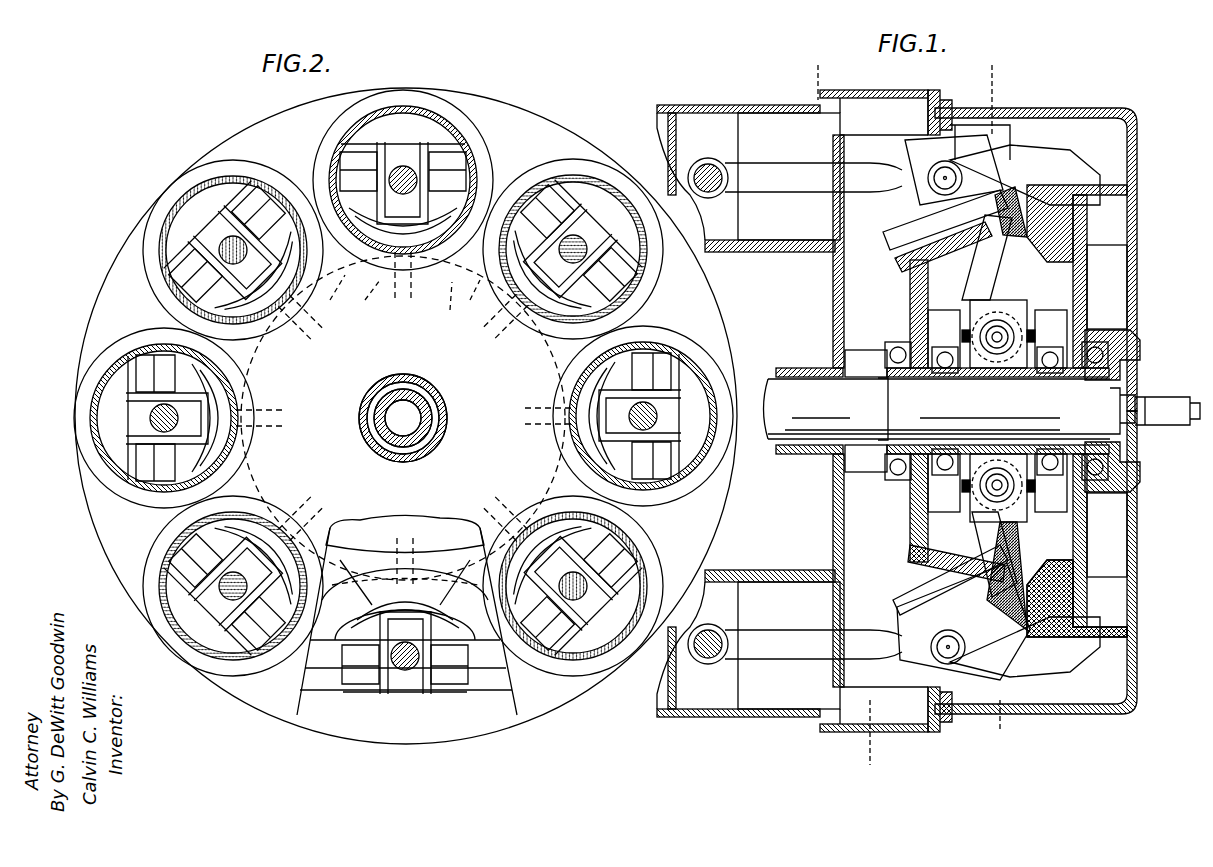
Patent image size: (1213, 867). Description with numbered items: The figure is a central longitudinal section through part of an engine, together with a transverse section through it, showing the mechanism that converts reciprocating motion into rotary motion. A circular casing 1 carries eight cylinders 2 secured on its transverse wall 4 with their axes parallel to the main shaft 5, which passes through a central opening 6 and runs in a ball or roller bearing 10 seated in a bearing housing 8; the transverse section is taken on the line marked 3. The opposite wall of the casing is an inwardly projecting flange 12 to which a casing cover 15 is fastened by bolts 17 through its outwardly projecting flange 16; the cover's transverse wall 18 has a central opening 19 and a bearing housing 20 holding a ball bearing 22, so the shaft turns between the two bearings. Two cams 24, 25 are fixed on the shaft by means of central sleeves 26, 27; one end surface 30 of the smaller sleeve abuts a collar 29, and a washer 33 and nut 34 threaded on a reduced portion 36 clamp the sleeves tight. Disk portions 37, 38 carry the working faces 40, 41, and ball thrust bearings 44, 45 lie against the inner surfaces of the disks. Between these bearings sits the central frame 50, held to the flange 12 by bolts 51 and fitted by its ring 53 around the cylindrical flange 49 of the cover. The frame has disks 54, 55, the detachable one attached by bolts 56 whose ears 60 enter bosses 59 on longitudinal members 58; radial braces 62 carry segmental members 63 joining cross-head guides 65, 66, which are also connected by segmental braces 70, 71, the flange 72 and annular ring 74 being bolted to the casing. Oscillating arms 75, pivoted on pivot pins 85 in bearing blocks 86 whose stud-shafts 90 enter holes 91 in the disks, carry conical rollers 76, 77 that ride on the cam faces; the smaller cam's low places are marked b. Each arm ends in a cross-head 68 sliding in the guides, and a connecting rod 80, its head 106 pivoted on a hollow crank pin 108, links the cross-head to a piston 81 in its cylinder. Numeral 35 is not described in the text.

In FIG. 2, the casing 1 is at (255, 132).
In FIG. 1, the casing 1 is at (894, 90).
In FIG. 2, the cylinders 2 is at (150, 258).
In FIG. 1, the cylinders 2 is at (768, 105).
In FIG. 1, the section line 3— 3 is at (994, 63).
In FIG. 2, the transverse wall 4 is at (392, 528).
In FIG. 1, the transverse wall 4 is at (833, 306).
In FIG. 2, the main shaft 5 is at (372, 402).
In FIG. 1, the central opening 6 is at (780, 380).
In FIG. 1, the bearing housing 8 is at (875, 391).
In FIG. 1, the ball or roller bearing 10 is at (882, 362).
In FIG. 2, the inwardly projecting flange 12 is at (440, 128).
In FIG. 1, the inwardly projecting flange 12 is at (928, 133).
In FIG. 1, the casing cover 15 is at (1050, 108).
In FIG. 1, the outwardly projecting flange 16 is at (948, 105).
In FIG. 1, the bolts 17 is at (974, 95).
In FIG. 1, the transverse wall 18 is at (1137, 256).
In FIG. 1, the central opening 19 is at (1160, 440).
In FIG. 1, the bearing housing 20 is at (1128, 322).
In FIG. 1, the ball bearing 22 is at (1140, 355).
In FIG. 2, the cam 24 is at (342, 300).
In FIG. 1, the cam 24 is at (1087, 300).
In FIG. 2, the cam 25 is at (370, 290).
In FIG. 1, the cam 25 is at (908, 298).
In FIG. 1, the central sleeve 26 is at (1018, 378).
In FIG. 1, the central sleeve 27 is at (988, 378).
In FIG. 1, the collar 29 is at (876, 440).
In FIG. 1, the end surface 30 is at (880, 376).
In FIG. 1, the washer 33 is at (1138, 380).
In FIG. 1, the nut 34 is at (1150, 392).
In FIG. 1, the spacer 35 is at (912, 323).
In FIG. 1, the reduced portion 36 is at (1165, 408).
In FIG. 1, the disk portion 37 is at (1082, 320).
In FIG. 1, the disk portion 38 is at (907, 321).
In FIG. 2, the working face 40 is at (478, 294).
In FIG. 1, the working face 40 is at (1022, 228).
In FIG. 2, the working face 41 is at (452, 310).
In FIG. 1, the working face 41 is at (908, 268).
In FIG. 1, the ball thrust bearing 44 is at (1051, 403).
In FIG. 1, the ball thrust bearing 45 is at (950, 360).
In FIG. 1, the cylindrical flange 49 is at (1125, 223).
In FIG. 2, the central frame 50 is at (238, 190).
In FIG. 1, the central frame 50 is at (918, 150).
In FIG. 1, the bolts 51 is at (962, 125).
In FIG. 1, the ring 53 is at (1130, 197).
In FIG. 1, the disk 54 is at (1040, 512).
In FIG. 1, the disk 55 is at (962, 322).
In FIG. 1, the bolts 56 is at (1040, 305).
In FIG. 1, the longitudinal members 58 is at (908, 318).
In FIG. 1, the enlarged bosses 59 is at (1038, 292).
In FIG. 1, the outwardly projecting ears 60 is at (1038, 320).
In FIG. 2, the radial braces 62 is at (332, 555).
In FIG. 1, the radial braces 62 is at (1012, 270).
In FIG. 2, the segmental members 63 is at (553, 197).
In FIG. 2, the cross-head guide 65 is at (372, 170).
In FIG. 1, the cross-head guide 65 is at (1100, 168).
In FIG. 2, the cross-head guide 66 is at (428, 170).
In FIG. 2, the cross-head 68 is at (200, 235).
In FIG. 1, the cross-head 68 is at (912, 200).
In FIG. 2, the segmental brace 70 is at (548, 205).
In FIG. 1, the segmental brace 70 is at (960, 136).
In FIG. 1, the segmental brace 71 is at (1055, 140).
In FIG. 2, the outwardly projecting flange 72 is at (187, 243).
In FIG. 1, the outwardly projecting flange 72 is at (955, 100).
In FIG. 1, the annular detachable ring 74 is at (966, 115).
In FIG. 1, the oscillating arm 75 is at (966, 305).
In FIG. 2, the roller 76 is at (405, 262).
In FIG. 1, the roller 76 is at (925, 232).
In FIG. 2, the roller 77 is at (430, 265).
In FIG. 1, the roller 77 is at (935, 250).
In FIG. 2, the connecting rod 80 is at (405, 170).
In FIG. 1, the connecting rod 80 is at (790, 172).
In FIG. 1, the piston 81 is at (676, 152).
In FIG. 1, the pivot pin 85 is at (1007, 352).
In FIG. 1, the bearing block 86 is at (997, 354).
In FIG. 1, the stud-shafts 90 is at (996, 416).
In FIG. 1, the holes 91 is at (961, 420).
In FIG. 2, the head 106 is at (590, 222).
In FIG. 1, the head 106 is at (920, 218).
In FIG. 1, the hollow crank pin 108 is at (928, 165).
In FIG. 1, the low places b— b is at (856, 410).